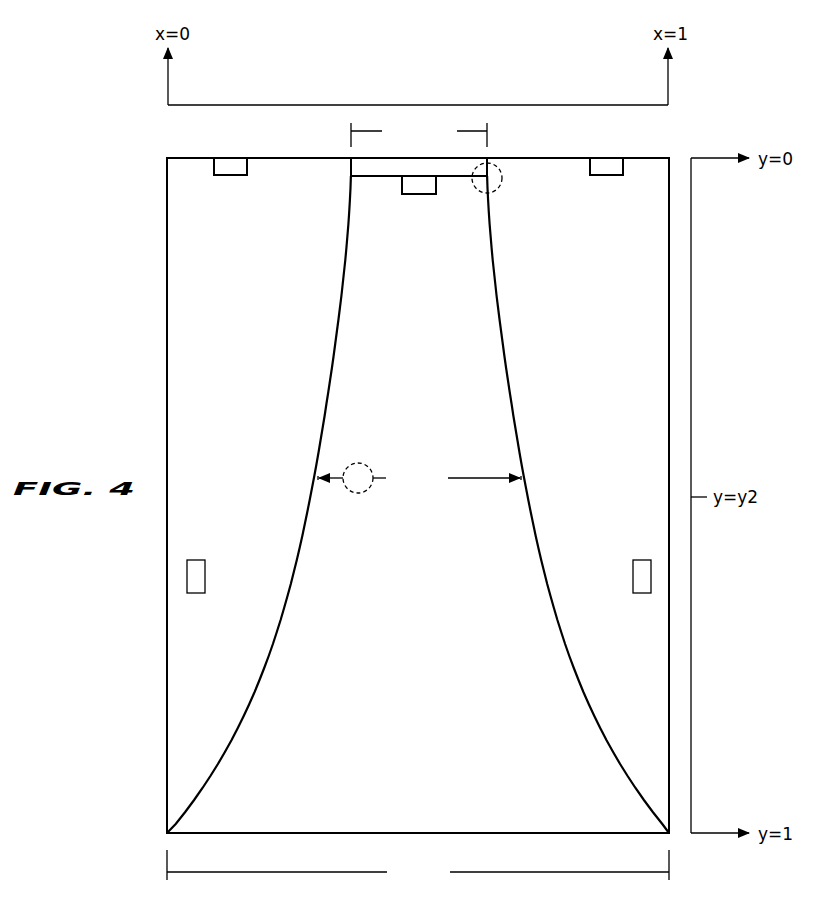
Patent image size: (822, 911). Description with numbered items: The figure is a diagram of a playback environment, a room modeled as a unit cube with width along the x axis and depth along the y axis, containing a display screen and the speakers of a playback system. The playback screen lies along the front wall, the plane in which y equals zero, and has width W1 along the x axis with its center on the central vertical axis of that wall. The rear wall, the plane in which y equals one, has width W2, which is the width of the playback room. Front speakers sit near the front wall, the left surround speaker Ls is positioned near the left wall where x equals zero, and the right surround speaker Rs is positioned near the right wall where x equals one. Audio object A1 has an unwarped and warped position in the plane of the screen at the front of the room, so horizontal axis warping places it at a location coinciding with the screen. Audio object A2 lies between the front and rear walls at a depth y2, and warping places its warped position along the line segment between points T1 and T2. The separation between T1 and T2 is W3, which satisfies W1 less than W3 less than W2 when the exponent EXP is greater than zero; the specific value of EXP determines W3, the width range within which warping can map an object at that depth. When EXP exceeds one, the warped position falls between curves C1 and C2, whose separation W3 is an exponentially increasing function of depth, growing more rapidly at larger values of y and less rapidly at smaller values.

The first warping curve C1 is at (333, 350).
The second warping curve C2 is at (500, 335).
The screen width W1 is at (419, 134).
The room width W2 is at (418, 866).
The width range W3 is at (419, 479).
The first boundary point T1 is at (298, 479).
The second boundary point T2 is at (539, 479).
The first audio object A1 is at (503, 182).
The second audio object A2 is at (362, 493).
The left surround speaker Ls is at (196, 558).
The right surround speaker Rs is at (640, 558).